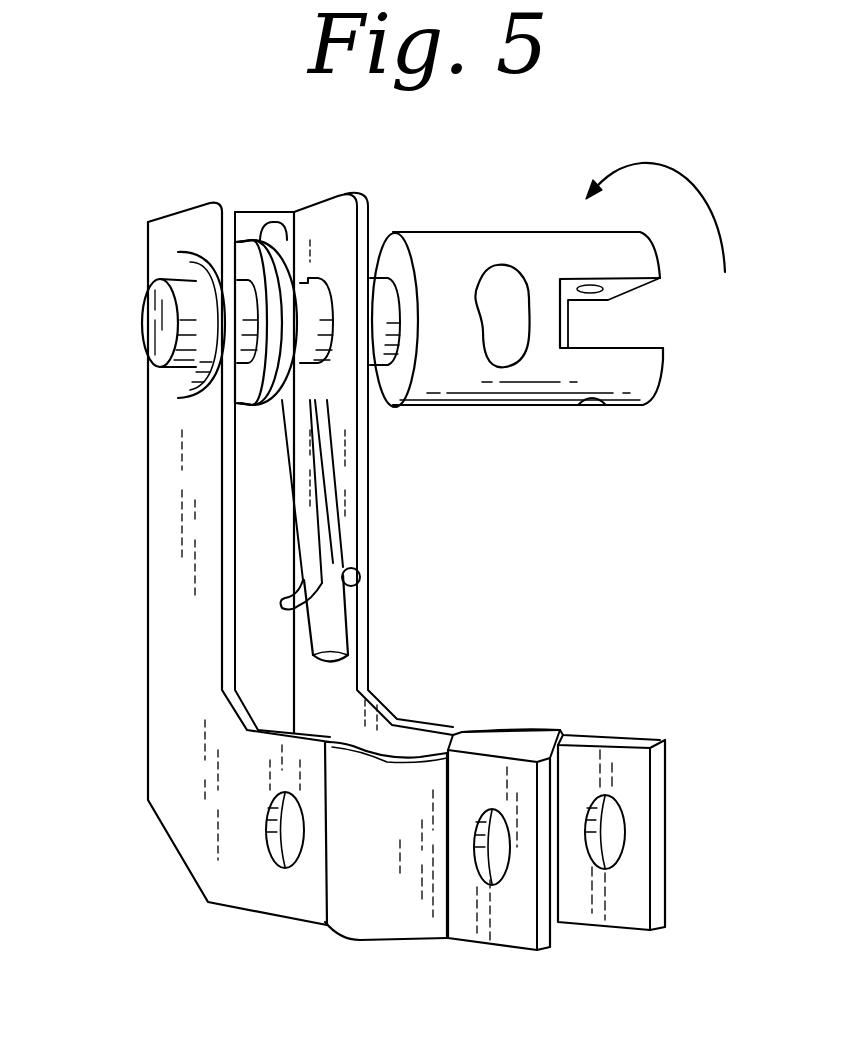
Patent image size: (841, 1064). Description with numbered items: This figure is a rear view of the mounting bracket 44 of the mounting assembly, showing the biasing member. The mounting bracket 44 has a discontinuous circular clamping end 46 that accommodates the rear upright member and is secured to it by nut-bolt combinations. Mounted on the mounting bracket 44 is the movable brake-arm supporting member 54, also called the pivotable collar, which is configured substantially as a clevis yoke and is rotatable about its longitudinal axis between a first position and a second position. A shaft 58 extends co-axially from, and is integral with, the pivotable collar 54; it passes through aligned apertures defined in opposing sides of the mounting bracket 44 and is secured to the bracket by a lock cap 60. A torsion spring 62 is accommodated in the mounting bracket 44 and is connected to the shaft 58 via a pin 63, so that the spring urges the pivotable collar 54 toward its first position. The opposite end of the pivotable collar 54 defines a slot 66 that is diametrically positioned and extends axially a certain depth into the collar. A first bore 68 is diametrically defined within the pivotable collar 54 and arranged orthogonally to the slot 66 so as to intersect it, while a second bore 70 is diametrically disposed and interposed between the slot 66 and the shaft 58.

The mounting bracket 44 is at (168, 640).
The discontinuous circular clamping end 46 is at (368, 922).
The brake-arm supporting member 54 is at (546, 334).
The shaft 58 is at (142, 342).
The lock cap 60 is at (175, 379).
The torsion spring 62 is at (248, 258).
The pin 63 is at (337, 627).
The slot 66 is at (613, 319).
The first bore 68 is at (595, 408).
The second bore 70 is at (500, 283).